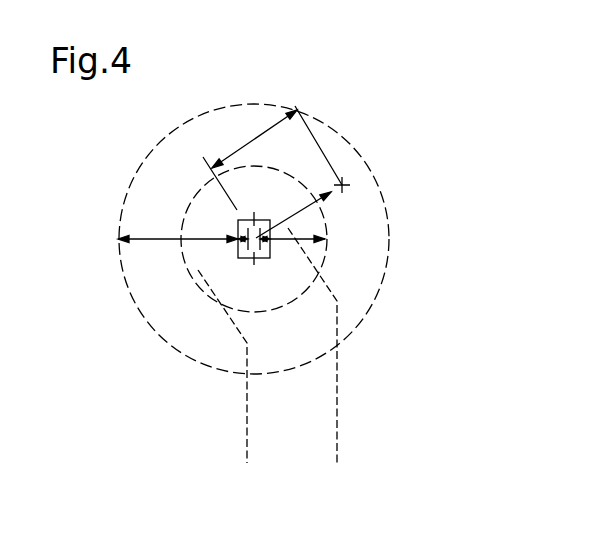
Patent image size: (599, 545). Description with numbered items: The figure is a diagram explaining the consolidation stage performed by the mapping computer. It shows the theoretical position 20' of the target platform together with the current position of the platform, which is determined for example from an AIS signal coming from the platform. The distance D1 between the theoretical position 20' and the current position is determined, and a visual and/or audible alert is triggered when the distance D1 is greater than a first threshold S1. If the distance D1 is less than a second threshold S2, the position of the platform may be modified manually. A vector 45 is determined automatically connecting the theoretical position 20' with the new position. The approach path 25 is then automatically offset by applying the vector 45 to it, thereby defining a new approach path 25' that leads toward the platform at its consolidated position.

The theoretical position 20' is at (212, 223).
The approach path 25 is at (216, 375).
The new approach path 25' is at (345, 349).
The vector 45 is at (321, 200).
The distance D1 is at (272, 158).
The first threshold S1 is at (297, 225).
The second threshold S2 is at (178, 227).